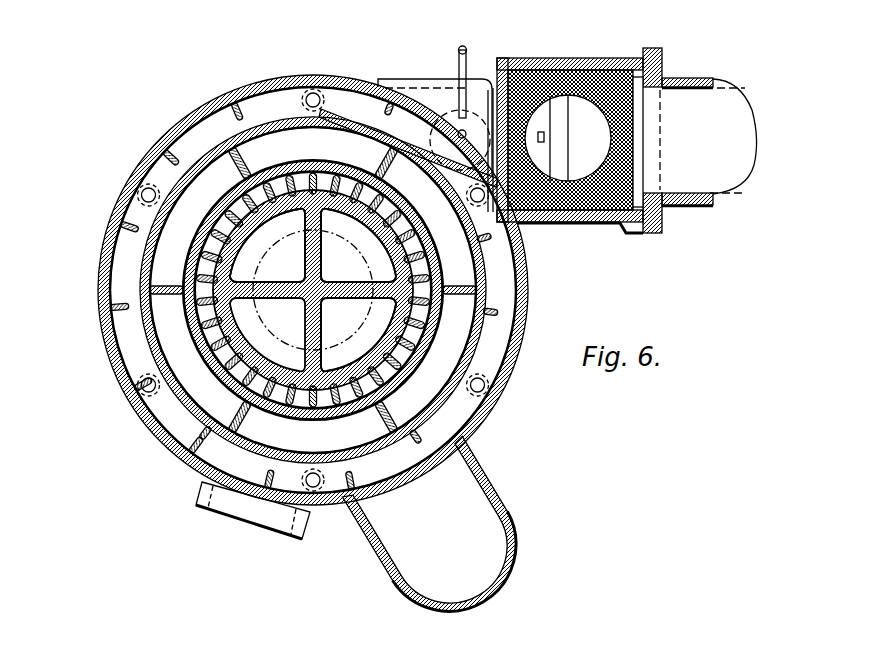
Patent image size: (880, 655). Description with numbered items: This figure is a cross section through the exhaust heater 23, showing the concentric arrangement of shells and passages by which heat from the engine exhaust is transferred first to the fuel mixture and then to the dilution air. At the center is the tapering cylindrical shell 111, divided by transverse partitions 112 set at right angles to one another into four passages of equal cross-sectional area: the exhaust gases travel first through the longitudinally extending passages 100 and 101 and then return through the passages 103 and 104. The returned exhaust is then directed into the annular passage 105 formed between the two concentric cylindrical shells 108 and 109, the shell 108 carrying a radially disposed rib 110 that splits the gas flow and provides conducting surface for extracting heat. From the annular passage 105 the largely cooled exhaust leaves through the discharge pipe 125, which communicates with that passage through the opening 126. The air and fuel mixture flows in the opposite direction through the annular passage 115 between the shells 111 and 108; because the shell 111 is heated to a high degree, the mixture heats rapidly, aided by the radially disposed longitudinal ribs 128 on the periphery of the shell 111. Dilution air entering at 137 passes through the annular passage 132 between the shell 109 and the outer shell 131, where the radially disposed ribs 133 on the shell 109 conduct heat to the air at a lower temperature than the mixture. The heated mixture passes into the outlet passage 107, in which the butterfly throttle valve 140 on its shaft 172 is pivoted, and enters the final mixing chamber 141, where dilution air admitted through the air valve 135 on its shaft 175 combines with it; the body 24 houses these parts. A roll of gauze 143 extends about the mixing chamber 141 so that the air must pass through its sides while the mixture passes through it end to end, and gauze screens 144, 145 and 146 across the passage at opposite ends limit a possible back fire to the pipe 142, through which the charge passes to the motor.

The exhaust heater 23 is at (170, 310).
The valve body 24 is at (622, 108).
The longitudinally extending passage 100 is at (313, 290).
The longitudinally extending passage 101 is at (268, 250).
The return passage 103 is at (326, 248).
The return passage 104 is at (330, 334).
The annular exhaust passage 105 is at (262, 128).
The outlet passage 107 is at (424, 182).
The cylindrical shell 108 is at (438, 273).
The cylindrical shell 109 is at (483, 262).
The radially disposed rib 110 is at (240, 158).
The tapering cylindrical shell 111 is at (442, 348).
The transverse partitions 112 is at (310, 244).
The annular mixture passage 115 is at (222, 242).
The discharge pipe 125 is at (473, 500).
The opening 126 is at (358, 508).
The radially disposed longitudinal ribs 128 is at (298, 173).
The outer shell 131 is at (146, 380).
The annular air passage 132 is at (503, 300).
The radially disposed ribs 133 is at (212, 137).
The air valve 135 is at (545, 100).
The air inlet 137 is at (236, 512).
The throttle valve 140 is at (452, 122).
The final mixing chamber 141 is at (655, 90).
The pipe 142 is at (700, 208).
The roll of gauze 143 is at (606, 205).
The gauze screen 144 is at (645, 135).
The gauze screen 145 is at (489, 95).
The gauze screen 146 is at (500, 90).
The throttle valve shaft 172 is at (459, 50).
The air valve shaft 175 is at (578, 98).